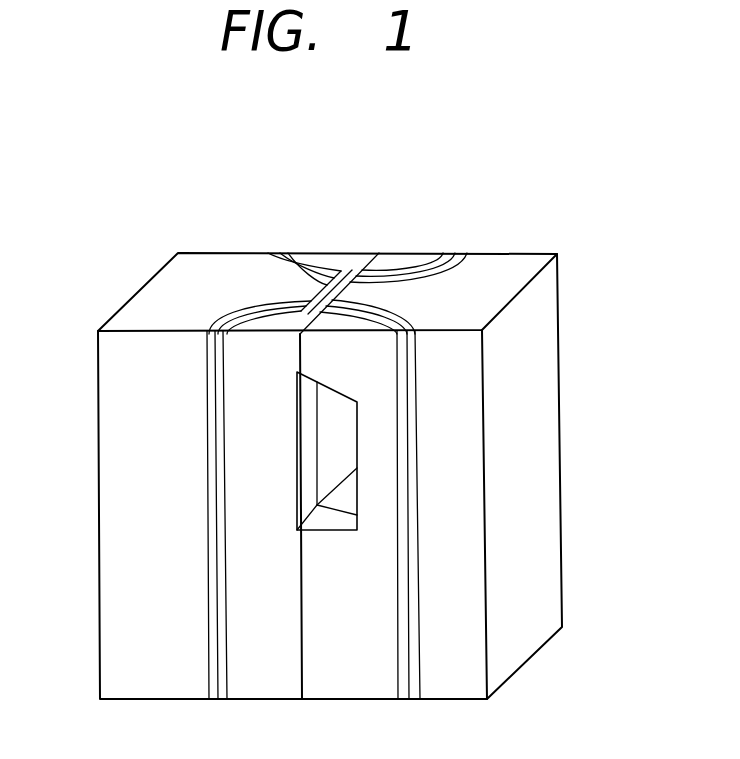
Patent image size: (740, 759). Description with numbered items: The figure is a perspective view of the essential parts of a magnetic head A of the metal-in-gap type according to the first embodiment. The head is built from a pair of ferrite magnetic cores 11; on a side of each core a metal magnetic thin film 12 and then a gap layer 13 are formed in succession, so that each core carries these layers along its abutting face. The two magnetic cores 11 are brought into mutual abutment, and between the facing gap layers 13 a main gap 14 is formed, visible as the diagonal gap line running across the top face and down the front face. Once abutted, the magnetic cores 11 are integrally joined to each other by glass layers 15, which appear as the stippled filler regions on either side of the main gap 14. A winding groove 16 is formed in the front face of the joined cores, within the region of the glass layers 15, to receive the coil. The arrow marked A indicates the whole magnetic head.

The ferrite magnetic core 11 is at (172, 287).
The metal magnetic thin film 12 is at (270, 252).
The gap layer 13 is at (287, 252).
The main gap 14 is at (383, 265).
The glass layer 15 is at (275, 323).
The winding groove 16 is at (347, 452).
The magnetic head A is at (564, 381).